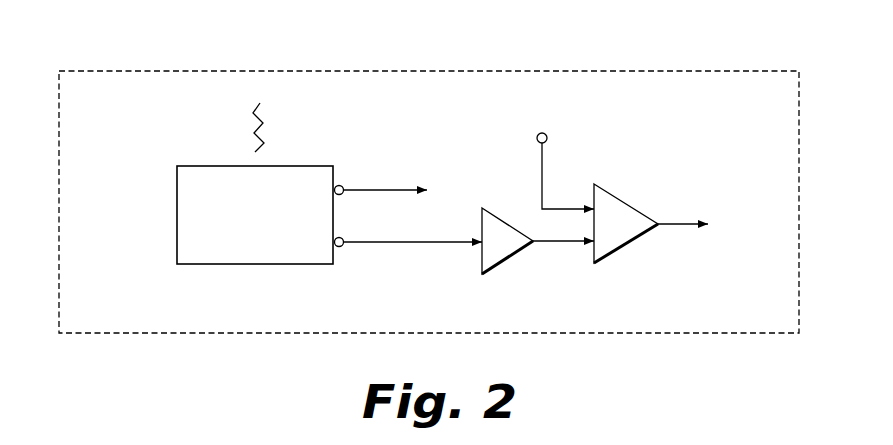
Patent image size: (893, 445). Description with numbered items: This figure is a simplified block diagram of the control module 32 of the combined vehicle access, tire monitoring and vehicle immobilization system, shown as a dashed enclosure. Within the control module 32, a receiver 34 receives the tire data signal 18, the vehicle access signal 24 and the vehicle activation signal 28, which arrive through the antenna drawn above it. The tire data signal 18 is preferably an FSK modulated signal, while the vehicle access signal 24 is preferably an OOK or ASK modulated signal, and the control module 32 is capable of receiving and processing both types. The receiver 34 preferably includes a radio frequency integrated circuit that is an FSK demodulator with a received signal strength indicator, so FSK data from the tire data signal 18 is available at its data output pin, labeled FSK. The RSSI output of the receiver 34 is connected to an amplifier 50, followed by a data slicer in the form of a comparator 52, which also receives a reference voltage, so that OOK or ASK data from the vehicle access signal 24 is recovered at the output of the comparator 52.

The control module 32 is at (608, 71).
The receiver 34 is at (177, 222).
The tire data signal 18 is at (337, 125).
The vehicle access signal 24 is at (337, 125).
The vehicle activation signal 28 is at (270, 127).
The amplifier 50 is at (503, 260).
The comparator 52 is at (622, 247).